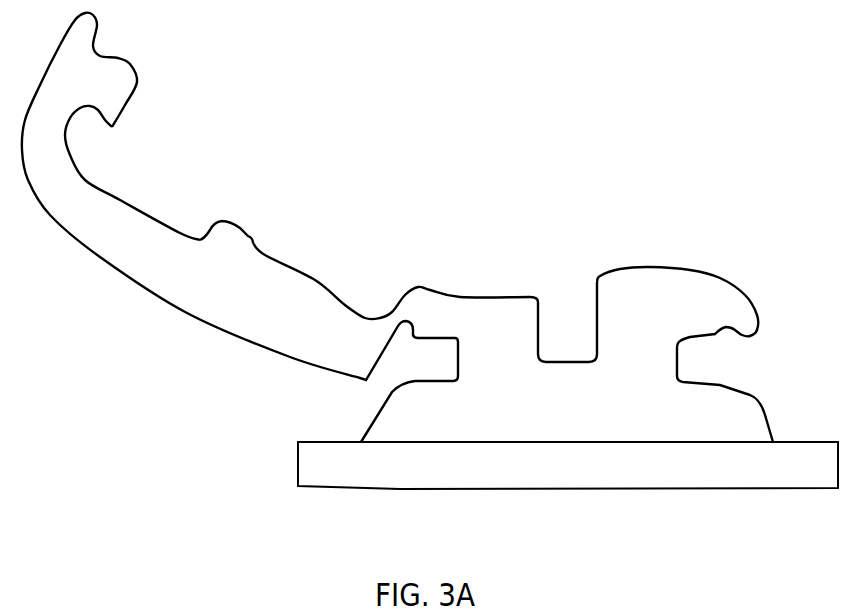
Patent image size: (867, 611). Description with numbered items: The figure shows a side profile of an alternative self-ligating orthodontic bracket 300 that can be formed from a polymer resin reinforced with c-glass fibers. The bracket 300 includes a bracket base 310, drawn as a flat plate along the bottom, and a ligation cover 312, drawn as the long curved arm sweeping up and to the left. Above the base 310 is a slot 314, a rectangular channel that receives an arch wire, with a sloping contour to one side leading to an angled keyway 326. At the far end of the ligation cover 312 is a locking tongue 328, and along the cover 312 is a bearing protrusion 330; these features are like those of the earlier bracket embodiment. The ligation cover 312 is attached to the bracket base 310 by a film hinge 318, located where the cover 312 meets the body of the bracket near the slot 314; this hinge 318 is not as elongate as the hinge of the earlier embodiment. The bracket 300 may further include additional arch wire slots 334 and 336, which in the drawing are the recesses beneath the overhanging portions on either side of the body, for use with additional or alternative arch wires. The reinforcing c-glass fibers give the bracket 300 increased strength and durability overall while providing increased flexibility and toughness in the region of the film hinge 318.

The bracket 300 is at (688, 188).
The bracket base 310 is at (795, 478).
The ligation cover 312 is at (192, 310).
The slot 314 is at (576, 292).
The film hinge 318 is at (392, 312).
The angled keyway 326 is at (727, 340).
The locking tongue 328 is at (110, 116).
The bearing protrusion 330 is at (228, 222).
The additional arch wire slot 334 is at (706, 370).
The additional arch wire slot 336 is at (398, 376).